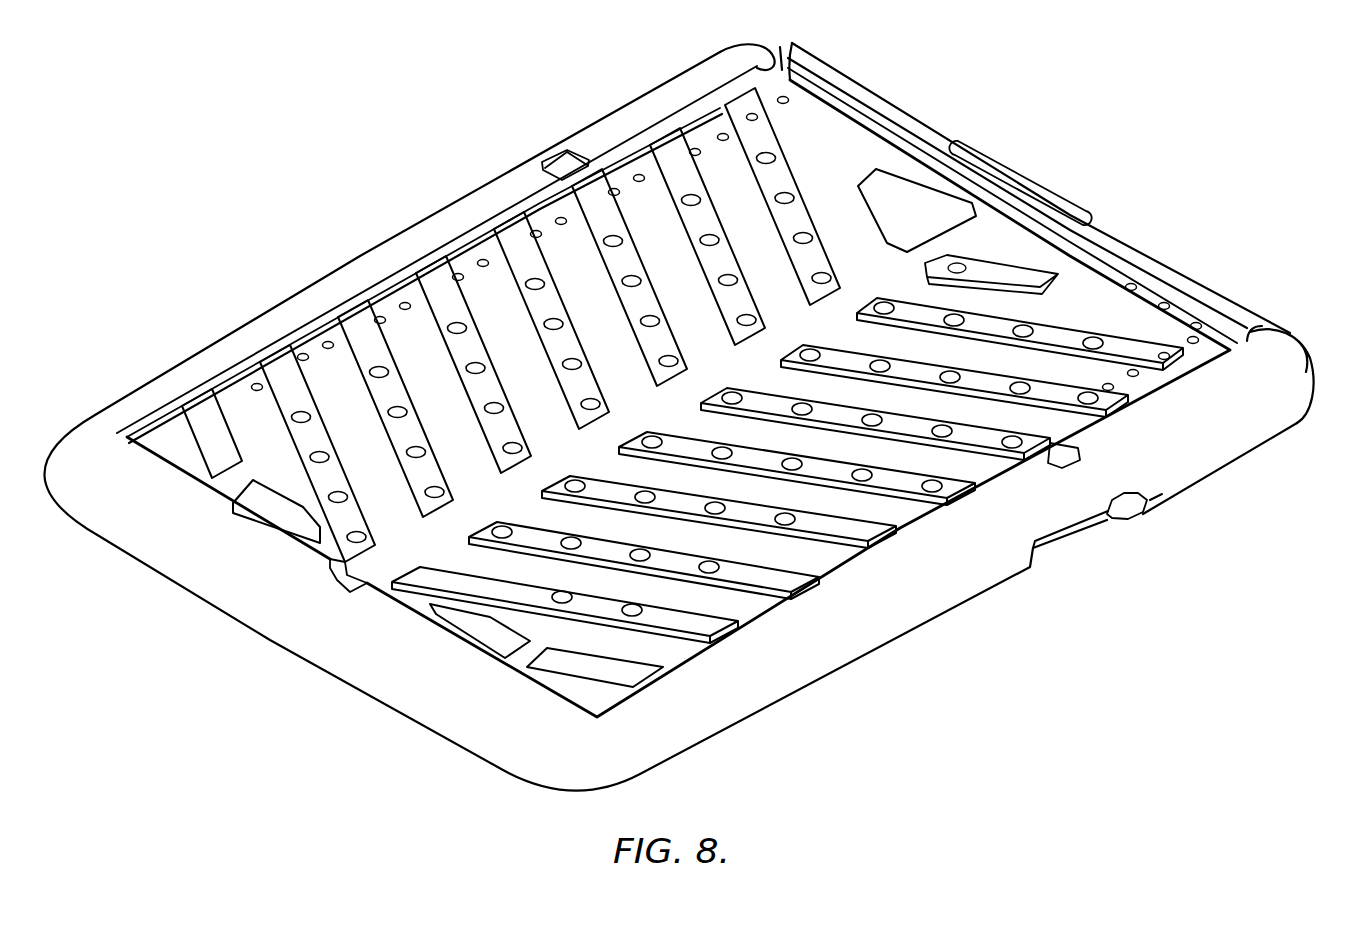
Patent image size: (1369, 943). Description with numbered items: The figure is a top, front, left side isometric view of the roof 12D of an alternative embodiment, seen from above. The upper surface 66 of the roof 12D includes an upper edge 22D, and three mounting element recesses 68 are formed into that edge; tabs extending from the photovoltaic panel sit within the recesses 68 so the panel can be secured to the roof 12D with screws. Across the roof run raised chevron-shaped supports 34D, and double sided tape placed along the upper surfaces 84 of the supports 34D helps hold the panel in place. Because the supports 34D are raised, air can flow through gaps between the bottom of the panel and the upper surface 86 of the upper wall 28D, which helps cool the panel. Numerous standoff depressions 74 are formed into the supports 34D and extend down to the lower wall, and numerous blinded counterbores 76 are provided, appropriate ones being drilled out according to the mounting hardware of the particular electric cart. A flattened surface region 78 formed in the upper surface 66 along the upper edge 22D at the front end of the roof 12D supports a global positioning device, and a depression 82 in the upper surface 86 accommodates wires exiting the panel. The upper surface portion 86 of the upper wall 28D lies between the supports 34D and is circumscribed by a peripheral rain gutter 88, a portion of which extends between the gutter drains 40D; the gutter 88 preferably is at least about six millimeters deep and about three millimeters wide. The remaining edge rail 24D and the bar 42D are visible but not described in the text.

The roof 12D is at (1107, 143).
The upper edge 22D is at (677, 92).
The support ledge of first rail 24D is at (623, 107).
The upper wall 28D is at (1147, 293).
The chevron-shaped supports 34D is at (927, 127).
The gutter drains 40D is at (1293, 342).
The latch bar 42D is at (1063, 538).
The upper surface 66 is at (1082, 303).
The mounting element recesses 68 is at (1082, 447).
The standoff depressions 74 is at (786, 196).
The blinded counterbores 76 is at (667, 655).
The flattened surface region 78 is at (1017, 177).
The depression 82 is at (987, 223).
The upper surfaces of chevron-shaped supports 84 is at (445, 305).
The upper surface of upper wall 86 is at (813, 558).
The peripheral rain gutter 88 is at (1150, 293).